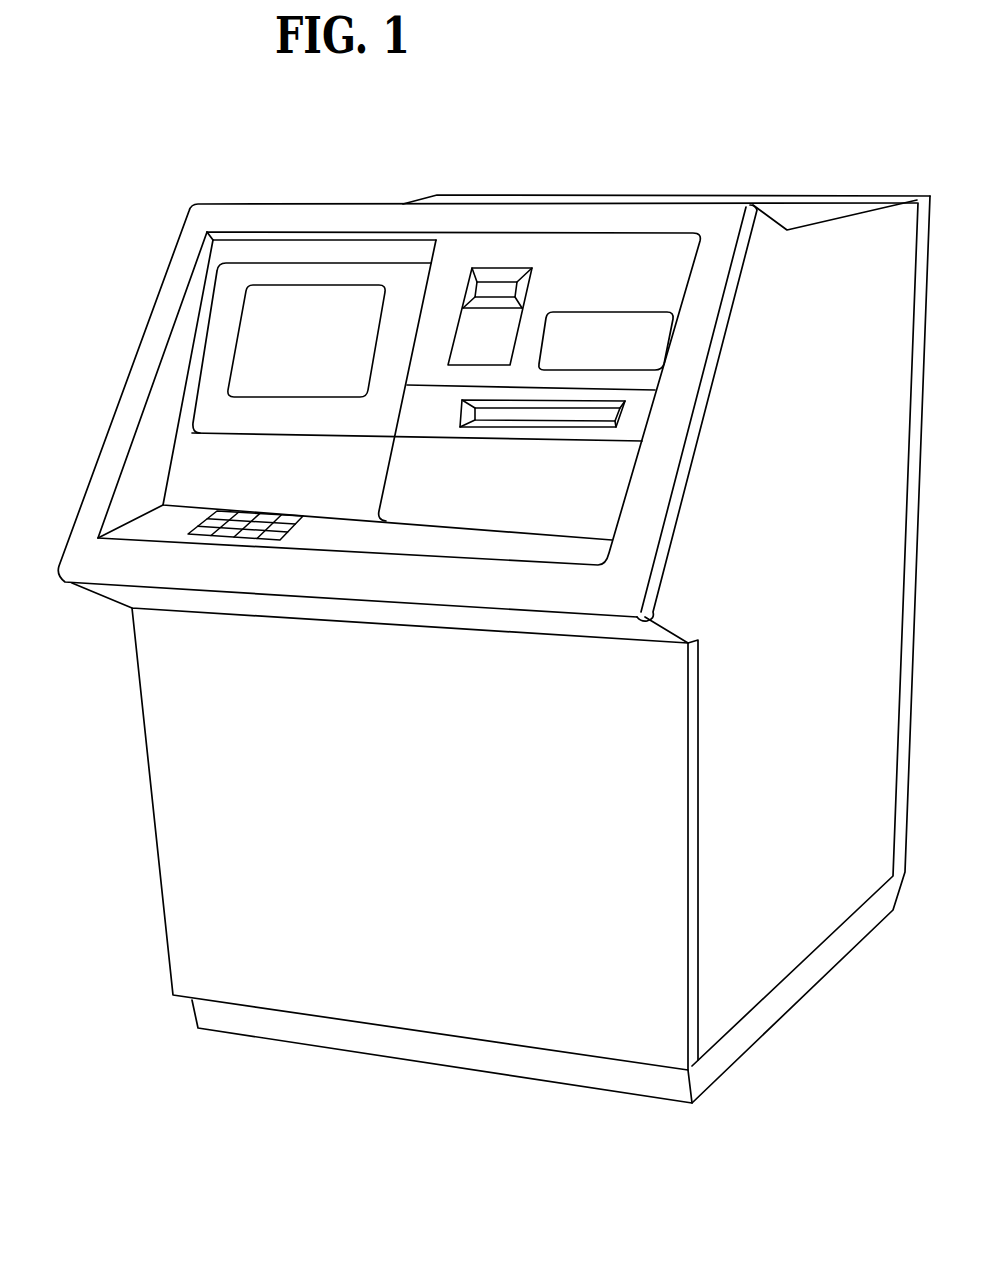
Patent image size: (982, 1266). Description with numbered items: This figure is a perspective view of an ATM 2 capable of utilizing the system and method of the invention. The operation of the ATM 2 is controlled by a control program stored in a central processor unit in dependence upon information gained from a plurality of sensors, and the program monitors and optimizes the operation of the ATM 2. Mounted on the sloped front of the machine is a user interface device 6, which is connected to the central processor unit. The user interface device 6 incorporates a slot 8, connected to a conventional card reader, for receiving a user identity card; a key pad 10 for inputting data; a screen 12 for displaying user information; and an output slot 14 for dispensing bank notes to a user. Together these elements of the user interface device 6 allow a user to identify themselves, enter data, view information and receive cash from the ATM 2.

The ATM 2 is at (790, 176).
The user interface device 6 is at (158, 459).
The slot 8 is at (503, 288).
The key pad 10 is at (262, 521).
The screen 12 is at (258, 315).
The output slot 14 is at (527, 414).